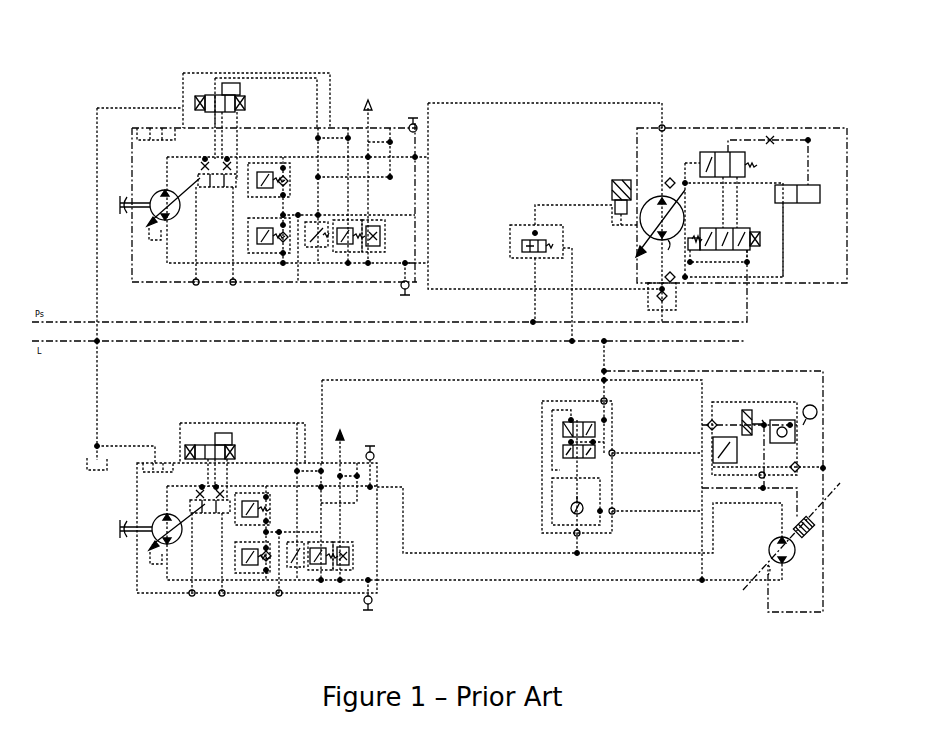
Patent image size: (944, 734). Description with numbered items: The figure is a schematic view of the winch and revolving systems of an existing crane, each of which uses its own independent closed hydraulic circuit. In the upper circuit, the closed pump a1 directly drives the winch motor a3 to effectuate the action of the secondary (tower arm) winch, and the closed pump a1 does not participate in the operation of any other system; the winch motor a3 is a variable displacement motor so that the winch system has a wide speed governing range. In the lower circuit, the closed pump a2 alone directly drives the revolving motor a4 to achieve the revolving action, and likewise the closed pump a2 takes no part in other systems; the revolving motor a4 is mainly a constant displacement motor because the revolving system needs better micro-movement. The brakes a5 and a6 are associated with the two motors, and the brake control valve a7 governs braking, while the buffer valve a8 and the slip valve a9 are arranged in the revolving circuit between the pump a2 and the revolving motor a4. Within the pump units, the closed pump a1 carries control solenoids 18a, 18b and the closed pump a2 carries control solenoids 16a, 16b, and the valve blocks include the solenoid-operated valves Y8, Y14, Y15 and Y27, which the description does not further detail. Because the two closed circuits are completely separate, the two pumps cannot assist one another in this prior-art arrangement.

The closed pump a1 is at (272, 181).
The closed pump a2 is at (259, 498).
The winch motor a3 is at (741, 204).
The revolving motor a4 is at (770, 565).
The brake a5 is at (618, 182).
The brake a6 is at (812, 522).
The brake control valve a7 is at (553, 260).
The buffer valve a8 is at (759, 421).
The slip valve a9 is at (566, 470).
The first pump control solenoid 18a is at (256, 126).
The second pump control solenoid 18b is at (240, 89).
The first pump control solenoid 16a is at (242, 461).
The second pump control solenoid 16b is at (232, 439).
The proportional solenoid valve Y8 is at (724, 230).
The solenoid valve Y14 is at (597, 429).
The solenoid valve Y15 is at (750, 413).
The solenoid valve Y27 is at (488, 247).